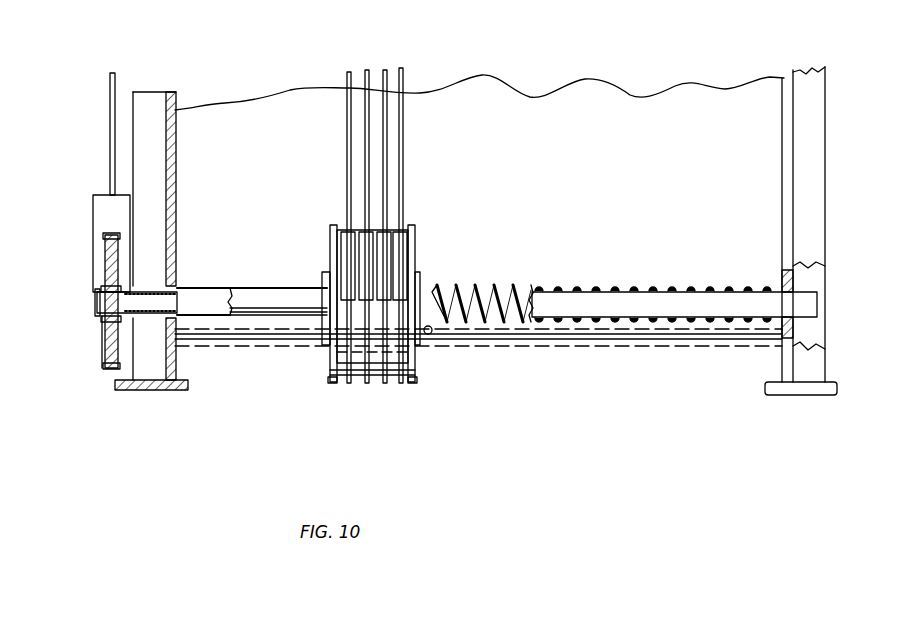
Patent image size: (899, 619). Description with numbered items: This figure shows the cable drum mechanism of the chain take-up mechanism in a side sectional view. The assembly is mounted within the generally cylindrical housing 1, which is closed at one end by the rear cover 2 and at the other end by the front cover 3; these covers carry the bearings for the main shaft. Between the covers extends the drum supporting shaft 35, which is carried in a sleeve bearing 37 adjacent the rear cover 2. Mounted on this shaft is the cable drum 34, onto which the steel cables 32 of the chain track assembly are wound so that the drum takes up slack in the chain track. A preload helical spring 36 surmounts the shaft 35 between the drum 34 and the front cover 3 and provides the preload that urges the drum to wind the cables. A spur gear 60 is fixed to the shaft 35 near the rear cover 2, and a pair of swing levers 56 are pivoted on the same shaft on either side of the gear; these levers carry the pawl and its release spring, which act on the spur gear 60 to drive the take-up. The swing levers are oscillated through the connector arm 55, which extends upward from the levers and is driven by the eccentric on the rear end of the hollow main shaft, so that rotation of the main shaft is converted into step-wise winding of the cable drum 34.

The housing 1 is at (516, 104).
The rear cover 2 is at (170, 390).
The front cover 3 is at (810, 392).
The steel cables 32 is at (401, 68).
The cable drum 34 is at (413, 383).
The drum supporting shaft 35 is at (817, 301).
The preload helical spring 36 is at (600, 287).
The sleeve bearing 37 is at (150, 290).
The connector arm 55 is at (112, 150).
The swing levers 56 is at (100, 322).
The spur gear 60 is at (107, 370).